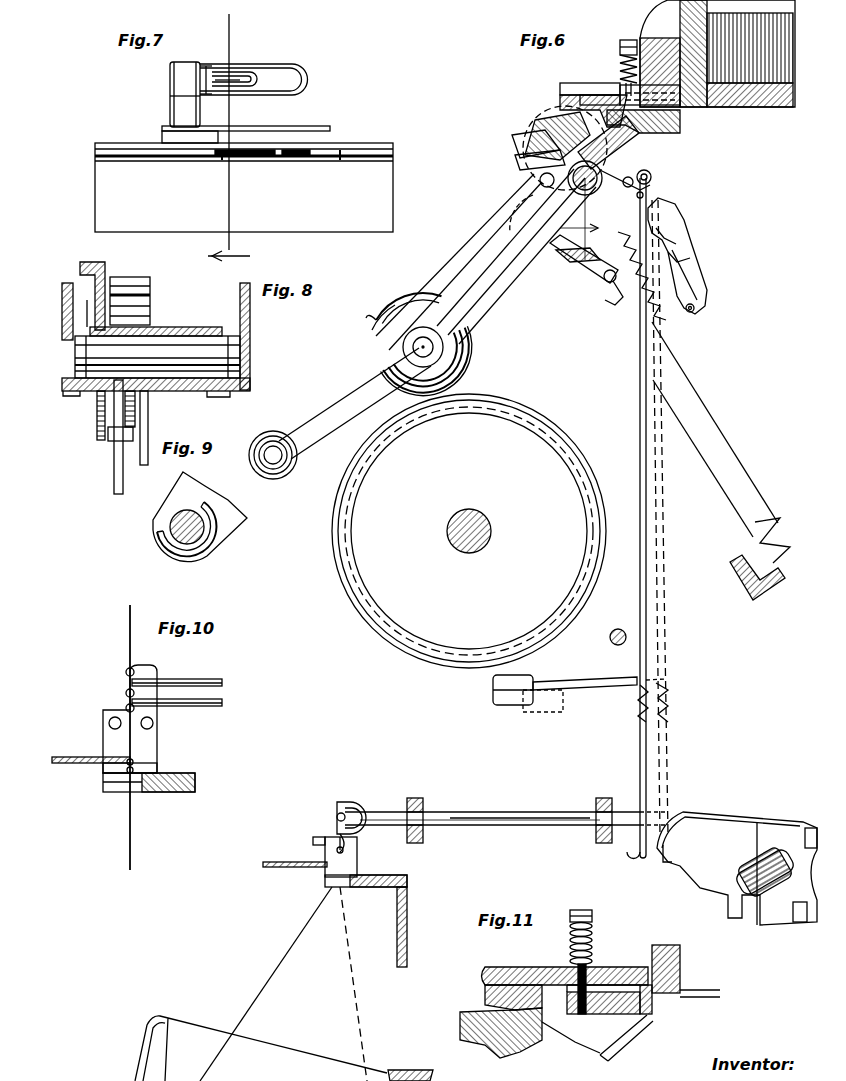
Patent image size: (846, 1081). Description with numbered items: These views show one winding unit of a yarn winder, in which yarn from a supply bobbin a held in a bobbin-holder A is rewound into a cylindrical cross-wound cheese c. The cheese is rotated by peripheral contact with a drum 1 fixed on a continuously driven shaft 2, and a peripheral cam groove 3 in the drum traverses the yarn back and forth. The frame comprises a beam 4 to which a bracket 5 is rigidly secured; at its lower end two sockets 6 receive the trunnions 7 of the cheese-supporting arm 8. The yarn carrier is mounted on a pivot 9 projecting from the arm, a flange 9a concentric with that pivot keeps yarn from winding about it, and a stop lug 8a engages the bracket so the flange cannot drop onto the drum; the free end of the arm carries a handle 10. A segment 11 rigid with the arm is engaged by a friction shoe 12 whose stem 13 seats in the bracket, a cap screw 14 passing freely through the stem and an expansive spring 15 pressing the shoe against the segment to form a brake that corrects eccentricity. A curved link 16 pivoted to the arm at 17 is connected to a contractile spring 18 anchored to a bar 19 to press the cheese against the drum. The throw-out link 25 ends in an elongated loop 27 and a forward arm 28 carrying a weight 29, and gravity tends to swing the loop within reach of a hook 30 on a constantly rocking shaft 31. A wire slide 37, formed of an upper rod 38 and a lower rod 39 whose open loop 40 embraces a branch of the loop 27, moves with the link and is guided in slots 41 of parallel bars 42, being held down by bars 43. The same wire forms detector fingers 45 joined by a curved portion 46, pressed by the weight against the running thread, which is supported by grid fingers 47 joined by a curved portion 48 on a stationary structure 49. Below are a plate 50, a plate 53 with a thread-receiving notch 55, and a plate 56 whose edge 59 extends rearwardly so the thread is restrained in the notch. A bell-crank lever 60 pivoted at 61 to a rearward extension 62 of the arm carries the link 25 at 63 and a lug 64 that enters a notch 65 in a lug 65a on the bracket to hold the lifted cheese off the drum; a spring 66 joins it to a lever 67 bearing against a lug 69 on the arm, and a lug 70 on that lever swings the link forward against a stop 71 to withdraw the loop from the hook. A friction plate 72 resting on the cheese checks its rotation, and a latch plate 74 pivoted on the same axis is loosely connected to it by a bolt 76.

In FIG. 6, the drum 1 is at (340, 548).
In FIG. 6, the shaft 2 is at (492, 526).
In FIG. 6, the peripheral cam groove 3 is at (336, 514).
In FIG. 6, the beam 4 is at (760, 107).
In FIG. 11, the beam 4 is at (680, 950).
In FIG. 8, the bracket 5 is at (62, 300).
In FIG. 9, the bracket 5 is at (248, 518).
In FIG. 11, the bracket 5 is at (600, 1045).
In FIG. 8, the sockets 6 is at (80, 395).
In FIG. 9, the sockets 6 is at (210, 548).
In FIG. 8, the trunnions 7 is at (233, 340).
In FIG. 9, the trunnions 7 is at (170, 527).
In FIG. 6, the cheese-supporting arm 8 is at (500, 290).
In FIG. 6, the stop lug 8a is at (650, 130).
In FIG. 8, the pivot 9 is at (91, 364).
In FIG. 6, the flange 9a is at (470, 360).
In FIG. 7, the handle 10 is at (232, 140).
In FIG. 6, the handle 10 is at (272, 432).
In FIG. 8, the segment 11 is at (90, 263).
In FIG. 6, the segment 11 is at (520, 159).
In FIG. 11, the segment 11 is at (462, 1030).
In FIG. 6, the friction shoe 12 is at (565, 100).
In FIG. 11, the friction shoe 12 is at (485, 995).
In FIG. 6, the stem 13 is at (608, 90).
In FIG. 11, the stem 13 is at (543, 968).
In FIG. 6, the cap screw 14 is at (628, 40).
In FIG. 11, the cap screw 14 is at (584, 910).
In FIG. 6, the helically-coiled expansive spring 15 is at (622, 54).
In FIG. 11, the helically-coiled expansive spring 15 is at (592, 940).
In FIG. 6, the curved link 16 is at (575, 268).
In FIG. 6, the pivot 17 is at (540, 180).
In FIG. 6, the helically-coiled contractile spring 18 is at (622, 320).
In FIG. 6, the bar 19 is at (760, 598).
In FIG. 8, the throw-out link 25 is at (145, 466).
In FIG. 6, the throw-out link 25 is at (638, 443).
In FIG. 6, the elongated loop 27 is at (638, 764).
In FIG. 6, the forwardly extending arm 28 is at (596, 675).
In FIG. 6, the weight 29 is at (495, 702).
In FIG. 6, the hook 30 is at (693, 828).
In FIG. 6, the rocking shaft 31 is at (760, 852).
In FIG. 6, the slide 37 is at (520, 798).
In FIG. 6, the upper rod 38 is at (460, 811).
In FIG. 6, the lower rod 39 is at (460, 826).
In FIG. 6, the open loop 40 is at (632, 825).
In FIG. 6, the slots 41 is at (430, 815).
In FIG. 6, the parallel bars 42 is at (420, 840).
In FIG. 6, the bars 43 is at (414, 797).
In FIG. 7, the detector fingers 45 is at (248, 73).
In FIG. 10, the detector fingers 45 is at (127, 707).
In FIG. 7, the integral curved portion 46 is at (262, 80).
In FIG. 6, the integral curved portion 46 is at (337, 818).
In FIG. 7, the fingers 47 is at (210, 64).
In FIG. 10, the fingers 47 is at (135, 672).
In FIG. 7, the integral curved portion 48 is at (310, 76).
In FIG. 6, the integral curved portion 48 is at (345, 800).
In FIG. 7, the stationary structure 49 is at (178, 78).
In FIG. 6, the stationary structure 49 is at (352, 855).
In FIG. 7, the plate 50 is at (350, 152).
In FIG. 10, the plate 53 is at (128, 792).
In FIG. 7, the thread-receiving notch 55 is at (222, 158).
In FIG. 10, the thread-receiving notch 55 is at (132, 770).
In FIG. 7, the plate 56 is at (305, 127).
In FIG. 10, the plate 56 is at (78, 765).
In FIG. 6, the plate 56 is at (285, 862).
In FIG. 10, the edge 59 is at (128, 762).
In FIG. 8, the bell-crank lever 60 is at (136, 413).
In FIG. 6, the bell-crank lever 60 is at (652, 178).
In FIG. 6, the pivot 61 is at (627, 177).
In FIG. 6, the rearward extension 62 is at (598, 210).
In FIG. 6, the pivot 63 is at (660, 195).
In FIG. 8, the lug 64 is at (132, 280).
In FIG. 6, the lug 64 is at (568, 112).
In FIG. 6, the notch 65 is at (672, 160).
In FIG. 6, the notched lug 65a is at (600, 100).
In FIG. 8, the helically-coiled contractile spring 66 is at (115, 445).
In FIG. 6, the helically-coiled contractile spring 66 is at (693, 314).
In FIG. 6, the lever 67 is at (700, 268).
In FIG. 6, the lug 69 is at (692, 254).
In FIG. 6, the lug 70 is at (680, 228).
In FIG. 6, the stop 71 is at (616, 630).
In FIG. 6, the friction plate 72 is at (443, 247).
In FIG. 6, the latch plate 74 is at (538, 122).
In FIG. 6, the bolt 76 is at (515, 140).
In FIG. 6, the cheese c is at (372, 342).
In FIG. 6, the bobbin-holder A is at (242, 1048).
In FIG. 6, the supply yarn mass a is at (292, 1080).